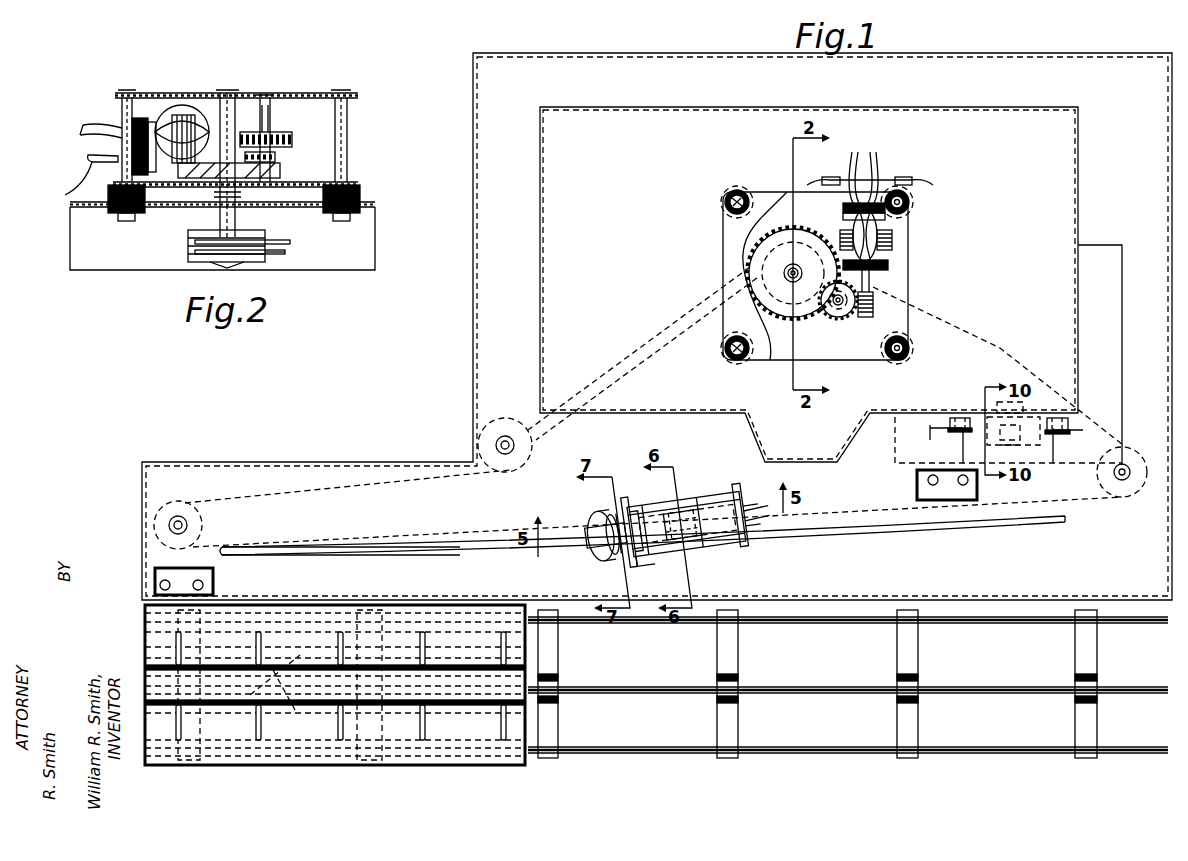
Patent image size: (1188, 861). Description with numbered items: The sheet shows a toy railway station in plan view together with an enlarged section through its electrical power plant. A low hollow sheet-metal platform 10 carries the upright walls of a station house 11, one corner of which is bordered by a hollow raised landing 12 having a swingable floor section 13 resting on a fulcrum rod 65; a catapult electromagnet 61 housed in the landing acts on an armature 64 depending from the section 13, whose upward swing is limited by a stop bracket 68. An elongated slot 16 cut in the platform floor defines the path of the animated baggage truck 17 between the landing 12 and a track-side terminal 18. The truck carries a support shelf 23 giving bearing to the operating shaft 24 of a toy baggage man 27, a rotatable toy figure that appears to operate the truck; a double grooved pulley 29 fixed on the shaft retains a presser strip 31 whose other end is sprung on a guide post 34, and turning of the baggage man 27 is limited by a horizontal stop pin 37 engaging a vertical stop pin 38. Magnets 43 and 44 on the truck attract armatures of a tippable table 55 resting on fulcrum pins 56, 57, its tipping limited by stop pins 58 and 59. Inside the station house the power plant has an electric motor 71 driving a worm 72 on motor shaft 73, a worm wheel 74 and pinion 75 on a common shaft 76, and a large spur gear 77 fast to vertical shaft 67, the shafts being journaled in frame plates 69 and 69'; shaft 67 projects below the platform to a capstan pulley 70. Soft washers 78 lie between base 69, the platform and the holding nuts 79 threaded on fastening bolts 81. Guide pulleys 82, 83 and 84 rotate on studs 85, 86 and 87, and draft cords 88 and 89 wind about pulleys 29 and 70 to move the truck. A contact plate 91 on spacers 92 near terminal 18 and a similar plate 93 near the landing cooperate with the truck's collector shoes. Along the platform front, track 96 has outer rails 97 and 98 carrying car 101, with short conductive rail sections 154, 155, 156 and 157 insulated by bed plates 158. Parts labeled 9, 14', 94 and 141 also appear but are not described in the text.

In FIG. 1, the solenoid housing 9 is at (930, 430).
In FIG. 2, the platform 10 is at (375, 205).
In FIG. 1, the platform 10 is at (470, 455).
In FIG. 1, the station house 11 is at (888, 413).
In FIG. 1, the raised landing 12 is at (895, 446).
In FIG. 1, the swingable floor section 13 is at (1045, 455).
In FIG. 1, the carriage block 14' is at (695, 500).
In FIG. 1, the elongated slot 16 is at (455, 554).
In FIG. 1, the animated baggage truck 17 is at (726, 556).
In FIG. 1, the track-side terminal 18 is at (262, 552).
In FIG. 1, the support shelf 23 is at (596, 552).
In FIG. 1, the figure-operating shaft 24 is at (595, 520).
In FIG. 1, the toy figure 27 is at (588, 548).
In FIG. 1, the double grooved pulley 29 is at (575, 518).
In FIG. 1, the presser strip 31 is at (760, 530).
In FIG. 1, the guide post 34 is at (755, 540).
In FIG. 1, the horizontal stop pin 37 is at (622, 558).
In FIG. 1, the vertical stop pin 38 is at (618, 512).
In FIG. 1, the magnet 43 is at (698, 550).
In FIG. 1, the magnet 44 is at (692, 495).
In FIG. 1, the tippable table 55 is at (725, 498).
In FIG. 1, the fulcrum pin 56 is at (660, 552).
In FIG. 1, the fulcrum pin 57 is at (657, 492).
In FIG. 1, the stop pins 58 is at (640, 560).
In FIG. 1, the stop pins 59 is at (645, 508).
In FIG. 1, the catapult electromagnet 61 is at (1040, 415).
In FIG. 1, the armature 64 is at (1025, 445).
In FIG. 1, the fulcrum rod 65 is at (990, 463).
In FIG. 2, the vertical shaft 67 is at (220, 195).
In FIG. 1, the vertical shaft 67 is at (790, 270).
In FIG. 1, the stop bracket 68 is at (960, 432).
In FIG. 2, the base 69 is at (254, 175).
In FIG. 1, the base 69 is at (833, 276).
In FIG. 2, the frame plate 69' is at (260, 93).
In FIG. 1, the frame plate 69' is at (705, 242).
In FIG. 2, the capstan pulley 70 is at (188, 246).
In FIG. 1, the capstan pulley 70 is at (775, 331).
In FIG. 2, the electric motor 71 is at (182, 105).
In FIG. 1, the electric motor 71 is at (892, 240).
In FIG. 2, the worm 72 is at (270, 135).
In FIG. 1, the worm 72 is at (875, 305).
In FIG. 2, the motor shaft 73 is at (227, 93).
In FIG. 1, the motor shaft 73 is at (888, 266).
In FIG. 2, the worm wheel 74 is at (292, 140).
In FIG. 1, the worm wheel 74 is at (848, 318).
In FIG. 2, the pinion 75 is at (275, 158).
In FIG. 1, the pinion 75 is at (857, 347).
In FIG. 2, the shaft 76 is at (265, 98).
In FIG. 1, the shaft 76 is at (836, 310).
In FIG. 2, the large spur gear 77 is at (280, 172).
In FIG. 1, the large spur gear 77 is at (775, 318).
In FIG. 2, the washers 78 is at (360, 196).
In FIG. 1, the washers 78 is at (725, 352).
In FIG. 2, the holding nuts 79 is at (122, 220).
In FIG. 2, the fastening bolts 81 is at (127, 96).
In FIG. 1, the fastening bolts 81 is at (730, 205).
In FIG. 1, the guide pulley 82 is at (1120, 497).
In FIG. 1, the guide pulley 83 is at (505, 418).
In FIG. 1, the guide pulley 84 is at (227, 527).
In FIG. 1, the stud 85 is at (1130, 478).
In FIG. 1, the stud 86 is at (508, 438).
In FIG. 1, the stud 87 is at (188, 522).
In FIG. 2, the draft cord 88 is at (285, 258).
In FIG. 1, the draft cord 88 is at (362, 530).
In FIG. 1, the draft cord 89 is at (1008, 375).
In FIG. 1, the electric contact plate 91 is at (184, 581).
In FIG. 1, the spacers 92 is at (168, 568).
In FIG. 1, the contact plate 93 is at (948, 487).
In FIG. 1, the terminal block 94 is at (917, 487).
In FIG. 1, the toy railway track 96 is at (692, 755).
In FIG. 1, the outer rail 97 is at (625, 624).
In FIG. 1, the outer rail 98 is at (632, 747).
In FIG. 1, the car 101 is at (335, 685).
In FIG. 1, the center rail 141 is at (665, 690).
In FIG. 1, the conductive rail section 154 is at (180, 725).
In FIG. 1, the conductive rail section 155 is at (190, 705).
In FIG. 1, the conductive rail section 156 is at (270, 660).
In FIG. 1, the conductive rail section 157 is at (275, 650).
In FIG. 1, the bed plates 158 is at (290, 700).